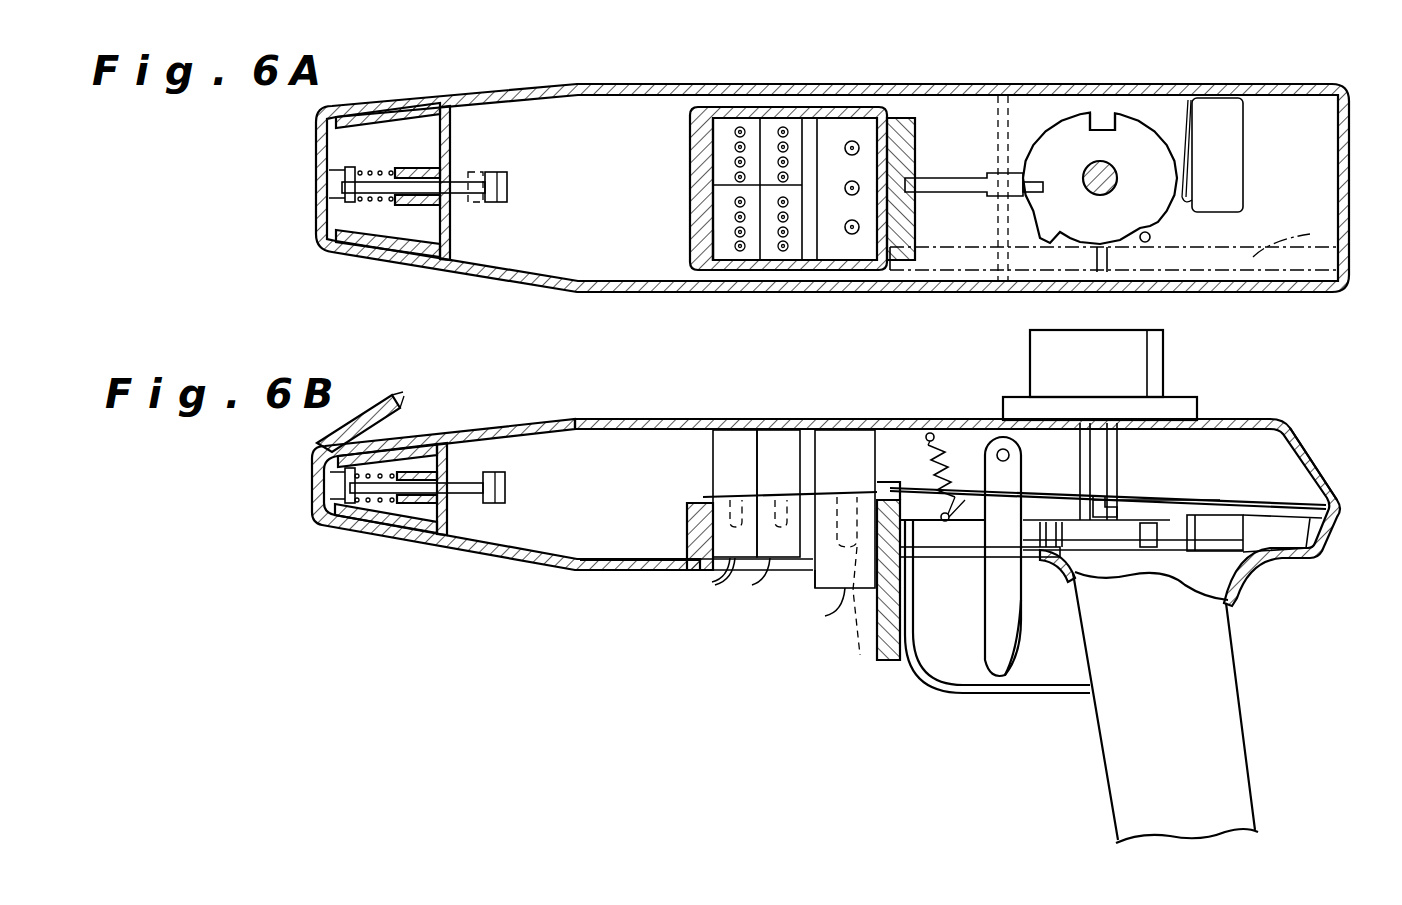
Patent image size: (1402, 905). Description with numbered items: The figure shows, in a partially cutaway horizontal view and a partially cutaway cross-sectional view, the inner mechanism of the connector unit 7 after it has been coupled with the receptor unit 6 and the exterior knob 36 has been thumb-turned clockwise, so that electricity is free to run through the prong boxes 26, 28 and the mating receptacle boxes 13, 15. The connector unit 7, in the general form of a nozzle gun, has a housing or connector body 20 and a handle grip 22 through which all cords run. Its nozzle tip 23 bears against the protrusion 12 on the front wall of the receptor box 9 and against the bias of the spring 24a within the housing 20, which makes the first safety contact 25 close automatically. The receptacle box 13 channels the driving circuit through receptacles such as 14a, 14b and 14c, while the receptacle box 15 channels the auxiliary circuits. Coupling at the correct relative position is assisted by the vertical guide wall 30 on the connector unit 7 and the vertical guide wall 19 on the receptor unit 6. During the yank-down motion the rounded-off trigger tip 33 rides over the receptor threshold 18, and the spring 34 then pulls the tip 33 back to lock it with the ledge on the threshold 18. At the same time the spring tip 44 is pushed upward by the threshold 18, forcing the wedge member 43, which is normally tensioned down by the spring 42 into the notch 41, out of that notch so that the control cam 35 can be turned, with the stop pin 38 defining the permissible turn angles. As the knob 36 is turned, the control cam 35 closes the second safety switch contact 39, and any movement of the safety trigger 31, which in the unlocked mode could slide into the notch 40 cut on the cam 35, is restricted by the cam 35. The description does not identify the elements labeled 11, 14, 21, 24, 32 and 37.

In FIG. 6A, the receptor unit 6 is at (420, 96).
In FIG. 6B, the receptor unit 6 is at (500, 568).
In FIG. 6A, the connector unit 7 is at (757, 78).
In FIG. 6B, the receptor box 9 is at (578, 562).
In FIG. 6B, the lower tip wall 11 is at (390, 534).
In FIG. 6A, the protrusion 12 is at (343, 184).
In FIG. 6B, the protrusion 12 is at (333, 484).
In FIG. 6A, the receptacle box 13 is at (835, 128).
In FIG. 6B, the receptacle box 13 is at (808, 578).
In FIG. 6B, the passage 14 is at (853, 613).
In FIG. 6A, the receptacle 14a is at (852, 232).
In FIG. 6A, the receptacle 14b is at (848, 192).
In FIG. 6A, the receptacle 14c is at (855, 145).
In FIG. 6A, the receptacle box 15 is at (766, 118).
In FIG. 6B, the receptacle box 15 is at (745, 572).
In FIG. 6A, the receptor threshold 18 is at (916, 155).
In FIG. 6B, the receptor threshold 18 is at (882, 497).
In FIG. 6A, the vertical guide wall 19 is at (705, 160).
In FIG. 6B, the vertical guide wall 19 is at (700, 495).
In FIG. 6A, the housing 20 is at (625, 88).
In FIG. 6A, the housing body 21 is at (986, 86).
In FIG. 6B, the housing body 21 is at (1240, 420).
In FIG. 6B, the handle grip 22 is at (1220, 720).
In FIG. 6A, the nozzle tip 23 is at (505, 96).
In FIG. 6B, the nozzle tip 23 is at (507, 420).
In FIG. 6A, the spring 24 is at (362, 195).
In FIG. 6B, the spring 24 is at (375, 490).
In FIG. 6A, the spring 24a is at (382, 205).
In FIG. 6A, the first safety contact 25 is at (488, 184).
In FIG. 6B, the first safety contact 25 is at (493, 478).
In FIG. 6B, the prong box 26 is at (826, 447).
In FIG. 6B, the prong box 28 is at (748, 447).
In FIG. 6A, the vertical guide wall 30 is at (705, 190).
In FIG. 6B, the vertical guide wall 30 is at (687, 523).
In FIG. 6A, the safety trigger 31 is at (1000, 192).
In FIG. 6B, the safety trigger 31 is at (996, 642).
In FIG. 6B, the trigger 32 is at (1001, 449).
In FIG. 6B, the trigger tip 33 is at (923, 528).
In FIG. 6B, the spring 34 is at (943, 452).
In FIG. 6A, the control cam 35 is at (1130, 150).
In FIG. 6B, the exterior knob 36 is at (1123, 370).
In FIG. 6A, the spring 37 is at (1123, 243).
In FIG. 6A, the stop pin 38 is at (1150, 242).
In FIG. 6B, the stop pin 38 is at (1150, 547).
In FIG. 6A, the second safety switch contact 39 is at (1227, 170).
In FIG. 6B, the second safety switch contact 39 is at (1217, 533).
In FIG. 6A, the notch 40 is at (1100, 112).
In FIG. 6A, the notch 41 is at (1033, 185).
In FIG. 6A, the spring 42 is at (1318, 236).
In FIG. 6B, the spring 42 is at (1277, 503).
In FIG. 6B, the wedge member 43 is at (1117, 503).
In FIG. 6A, the spring tip 44 is at (958, 263).
In FIG. 6B, the spring tip 44 is at (884, 494).